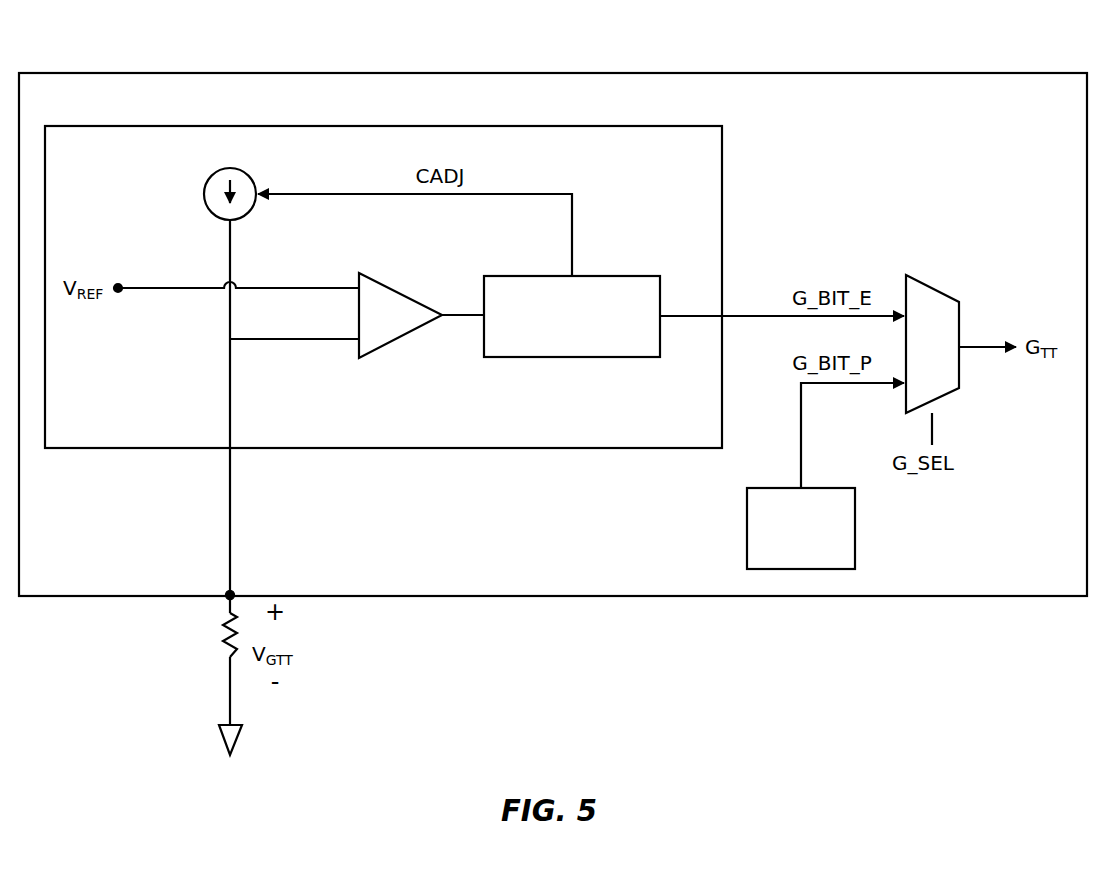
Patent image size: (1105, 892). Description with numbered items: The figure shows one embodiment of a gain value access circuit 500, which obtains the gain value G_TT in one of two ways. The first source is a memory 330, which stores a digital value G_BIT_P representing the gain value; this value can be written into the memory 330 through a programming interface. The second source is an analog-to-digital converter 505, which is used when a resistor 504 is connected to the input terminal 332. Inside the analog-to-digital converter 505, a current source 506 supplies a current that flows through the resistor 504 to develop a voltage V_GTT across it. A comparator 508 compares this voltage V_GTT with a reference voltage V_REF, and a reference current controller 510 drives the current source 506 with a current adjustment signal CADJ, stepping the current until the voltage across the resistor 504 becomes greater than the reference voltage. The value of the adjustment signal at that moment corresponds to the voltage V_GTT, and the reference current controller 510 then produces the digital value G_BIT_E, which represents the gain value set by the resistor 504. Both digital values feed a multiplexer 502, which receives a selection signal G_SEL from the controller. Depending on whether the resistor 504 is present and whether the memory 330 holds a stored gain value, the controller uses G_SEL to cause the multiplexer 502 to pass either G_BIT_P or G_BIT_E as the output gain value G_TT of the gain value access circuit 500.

The gain value access circuit 500 is at (526, 72).
The analog-to-digital converter 505 is at (662, 125).
The current source 506 is at (205, 193).
The comparator 508 is at (400, 315).
The reference current controller 510 is at (612, 276).
The multiplexer 502 is at (932, 344).
The memory 330 is at (856, 526).
The input terminal 332 is at (230, 594).
The resistor 504 is at (226, 646).